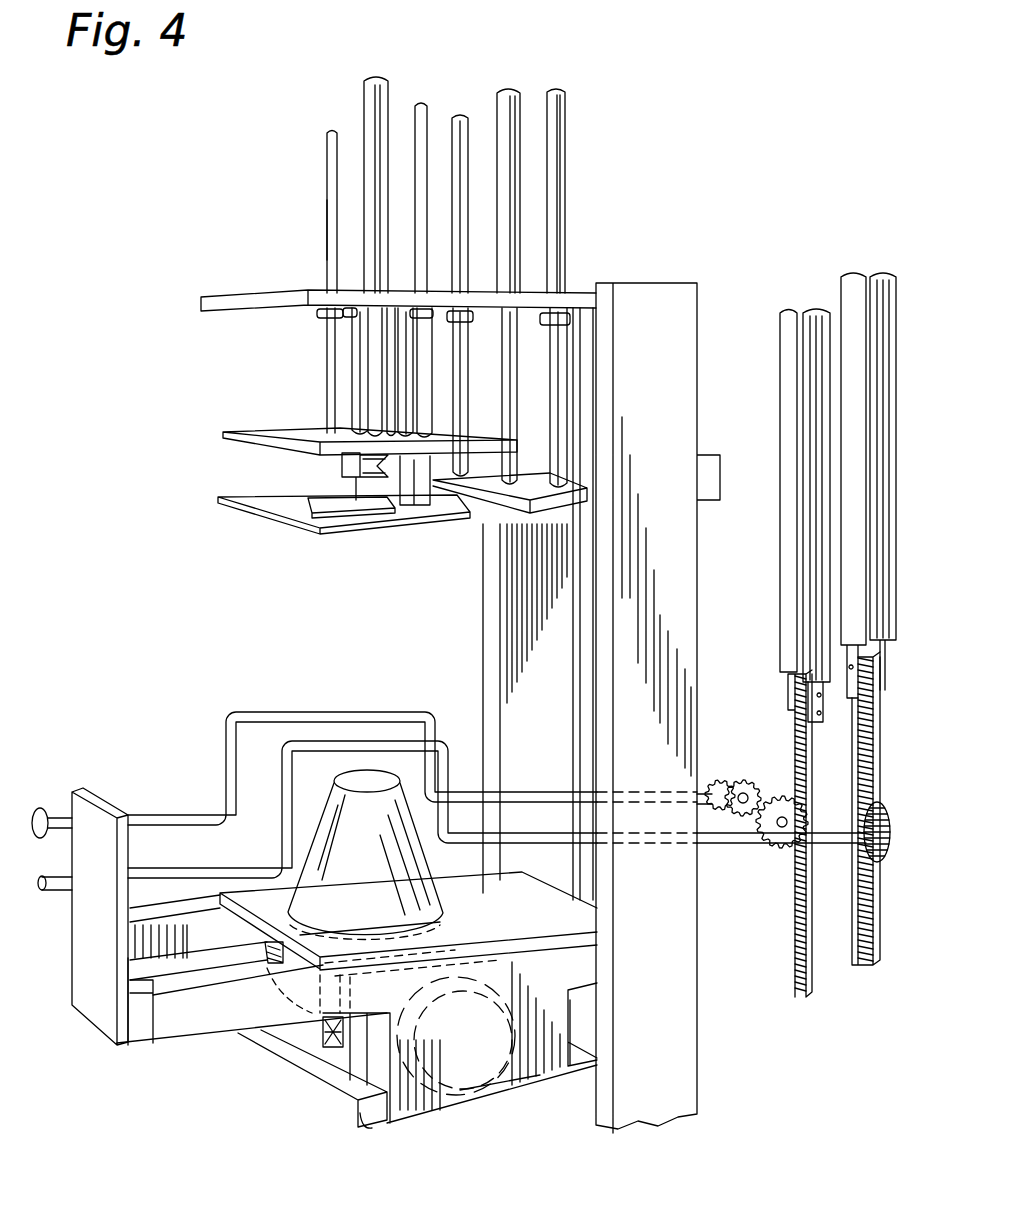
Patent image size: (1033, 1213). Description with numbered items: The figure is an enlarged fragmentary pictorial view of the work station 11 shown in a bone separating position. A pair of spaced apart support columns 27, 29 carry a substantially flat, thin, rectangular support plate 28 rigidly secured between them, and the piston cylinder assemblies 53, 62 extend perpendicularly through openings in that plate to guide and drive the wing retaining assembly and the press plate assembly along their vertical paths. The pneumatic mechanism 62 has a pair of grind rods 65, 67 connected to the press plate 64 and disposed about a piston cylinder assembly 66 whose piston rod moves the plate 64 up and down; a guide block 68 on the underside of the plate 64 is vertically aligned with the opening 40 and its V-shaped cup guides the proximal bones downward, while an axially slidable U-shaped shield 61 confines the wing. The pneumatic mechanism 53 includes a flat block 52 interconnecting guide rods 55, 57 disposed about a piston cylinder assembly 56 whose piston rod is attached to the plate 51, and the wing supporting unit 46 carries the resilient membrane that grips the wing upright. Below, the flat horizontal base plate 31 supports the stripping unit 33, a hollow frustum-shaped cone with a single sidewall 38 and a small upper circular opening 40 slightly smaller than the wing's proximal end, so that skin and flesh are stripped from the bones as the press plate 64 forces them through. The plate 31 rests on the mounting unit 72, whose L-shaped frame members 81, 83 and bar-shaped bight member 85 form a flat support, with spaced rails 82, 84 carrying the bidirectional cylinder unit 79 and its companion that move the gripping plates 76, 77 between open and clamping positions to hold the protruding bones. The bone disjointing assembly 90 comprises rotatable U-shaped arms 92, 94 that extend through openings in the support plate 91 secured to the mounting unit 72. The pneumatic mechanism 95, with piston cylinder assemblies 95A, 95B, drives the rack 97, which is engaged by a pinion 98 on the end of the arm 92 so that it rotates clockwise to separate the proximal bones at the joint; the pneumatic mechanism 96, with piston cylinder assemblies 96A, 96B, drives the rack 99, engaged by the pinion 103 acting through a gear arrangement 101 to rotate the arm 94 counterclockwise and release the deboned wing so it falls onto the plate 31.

The work station 11 is at (146, 197).
The support column 27 is at (684, 1074).
The support plate 28 is at (201, 303).
The support column 29 is at (486, 588).
The base plate 31 is at (546, 944).
The stripping unit 33 is at (448, 895).
The sidewall 38 is at (432, 908).
The upper circular opening 40 is at (373, 779).
The wing supporting unit 46 is at (342, 512).
The plate 51 is at (218, 502).
The block 52 is at (488, 500).
The piston cylinder assembly 53 is at (499, 81).
The guide rod 55 is at (474, 128).
The piston cylinder assembly 56 is at (521, 112).
The guide rod 57 is at (567, 128).
The U-shaped shield 61 is at (415, 502).
The piston cylinder assembly 62 is at (284, 153).
The press plate 64 is at (223, 436).
The grind rod 65 is at (328, 228).
The piston cylinder assembly 66 is at (364, 106).
The grind rod 67 is at (427, 138).
The guide block 68 is at (342, 465).
The mounting unit 72 is at (522, 1104).
The clamping plate 76 is at (298, 1030).
The clamping plate 77 is at (340, 1070).
The bidirectional cylinder unit 79 is at (464, 1068).
The L-shaped frame member 81 is at (188, 1027).
The rail 82 is at (363, 1122).
The L-shaped frame member 83 is at (164, 918).
The rail 84 is at (583, 1078).
The bight member 85 is at (117, 1021).
The bone disjointing assembly 90 is at (761, 834).
The support plate 91 is at (72, 949).
The U-shaped arm 92 is at (723, 845).
The U-shaped arm 94 is at (332, 712).
The pneumatic mechanism 95 is at (846, 439).
The piston cylinder assembly 95A is at (850, 305).
The piston cylinder assembly 95B is at (888, 296).
The pneumatic mechanism 96 is at (757, 462).
The piston cylinder assembly 96A is at (784, 352).
The piston cylinder assembly 96B is at (812, 381).
The rack 97 is at (868, 751).
The pinion 98 is at (879, 803).
The rack 99 is at (794, 955).
The gear arrangement 101 is at (736, 774).
The pinion 103 is at (782, 851).